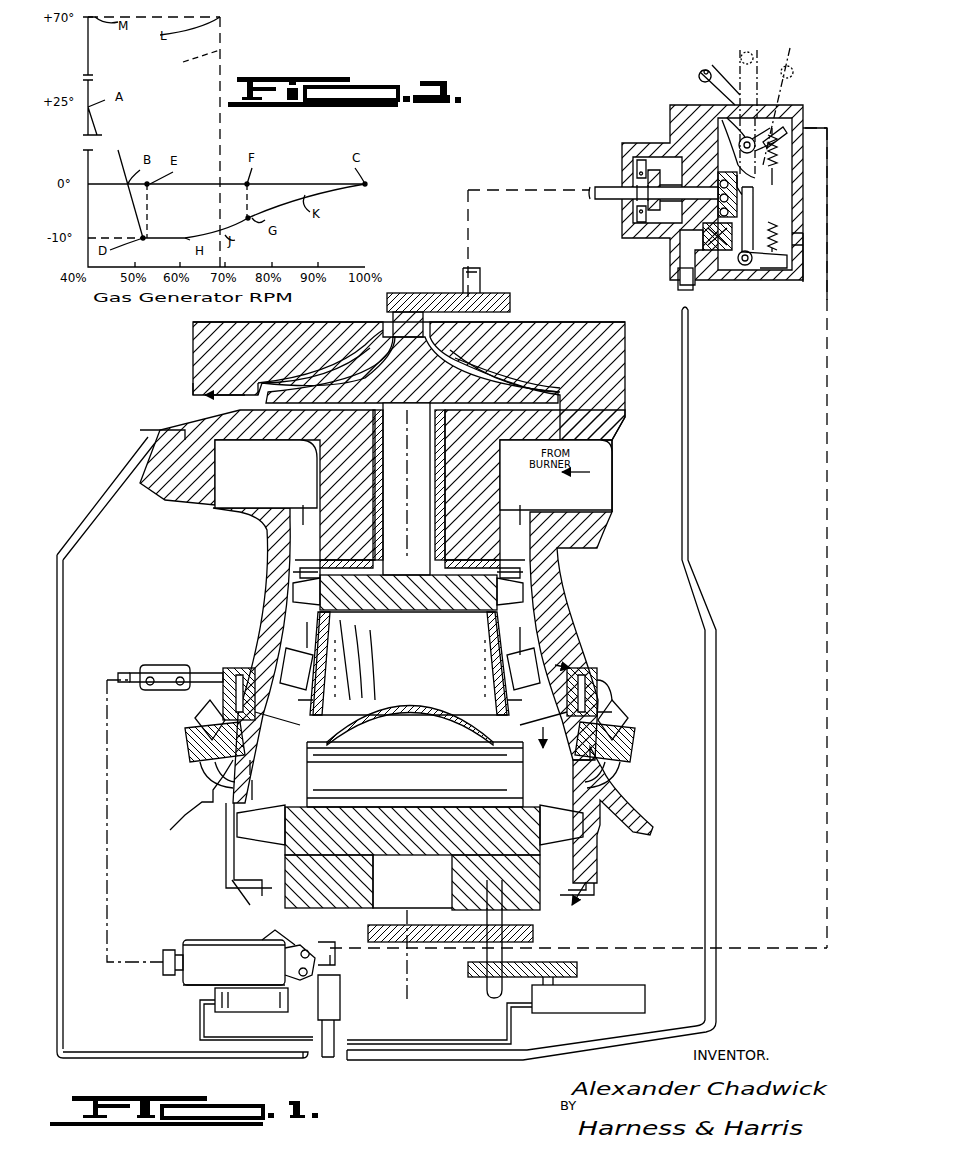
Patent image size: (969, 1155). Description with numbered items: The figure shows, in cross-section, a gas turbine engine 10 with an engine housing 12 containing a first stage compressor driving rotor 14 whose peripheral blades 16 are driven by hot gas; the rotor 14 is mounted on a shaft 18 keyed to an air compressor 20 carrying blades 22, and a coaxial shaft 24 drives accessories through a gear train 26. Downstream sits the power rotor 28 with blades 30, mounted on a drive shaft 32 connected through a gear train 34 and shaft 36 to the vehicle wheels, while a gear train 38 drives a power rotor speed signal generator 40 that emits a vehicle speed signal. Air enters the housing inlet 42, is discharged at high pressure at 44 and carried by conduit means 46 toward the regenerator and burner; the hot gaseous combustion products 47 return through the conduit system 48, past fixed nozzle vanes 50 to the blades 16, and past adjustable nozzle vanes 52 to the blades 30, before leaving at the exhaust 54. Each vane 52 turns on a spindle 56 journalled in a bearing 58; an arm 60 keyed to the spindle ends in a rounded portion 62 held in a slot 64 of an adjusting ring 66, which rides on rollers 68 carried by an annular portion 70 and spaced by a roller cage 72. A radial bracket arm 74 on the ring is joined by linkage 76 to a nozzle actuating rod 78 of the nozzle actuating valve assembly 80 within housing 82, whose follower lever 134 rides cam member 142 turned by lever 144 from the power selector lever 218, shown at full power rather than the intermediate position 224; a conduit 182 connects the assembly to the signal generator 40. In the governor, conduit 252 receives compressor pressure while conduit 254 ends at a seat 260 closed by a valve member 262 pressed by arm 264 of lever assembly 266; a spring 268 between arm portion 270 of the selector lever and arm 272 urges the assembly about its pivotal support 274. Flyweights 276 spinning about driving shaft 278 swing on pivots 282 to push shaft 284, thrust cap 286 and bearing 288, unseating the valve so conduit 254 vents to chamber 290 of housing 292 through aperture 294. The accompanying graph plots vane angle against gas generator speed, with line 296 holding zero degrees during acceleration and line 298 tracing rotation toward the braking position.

In FIG. 1, the gas turbine engine 10 is at (550, 312).
In FIG. 1, the engine housing 12 is at (278, 557).
In FIG. 1, the compressor driving rotor 14 is at (400, 615).
In FIG. 1, the peripheral blades 16 is at (300, 600).
In FIG. 1, the shaft 18 is at (409, 489).
In FIG. 1, the air compressor 20 is at (412, 370).
In FIG. 1, the compressor blades 22 is at (330, 368).
In FIG. 1, the coaxial shaft 24 is at (393, 320).
In FIG. 1, the gear train 26 is at (441, 292).
In FIG. 1, the power rotor 28 is at (412, 812).
In FIG. 1, the power rotor blades 30 is at (233, 848).
In FIG. 1, the drive shaft 32 is at (412, 882).
In FIG. 1, the gear train 34 is at (450, 942).
In FIG. 1, the shaft 36 is at (487, 985).
In FIG. 1, the gear train 38 is at (540, 958).
In FIG. 1, the power rotor speed signal generator 40 is at (622, 985).
In FIG. 1, the housing inlet 42 is at (527, 381).
In FIG. 1, the compressor discharge 44 is at (294, 358).
In FIG. 1, the conduit means 46 is at (193, 388).
In FIG. 1, the hot gaseous combustion products 47 is at (590, 466).
In FIG. 1, the conduit system 48 is at (268, 547).
In FIG. 1, the fixed nozzles or vanes 50 is at (300, 573).
In FIG. 1, the adjustable nozzles or vanes 52 is at (320, 784).
In FIG. 1, the exhaust 54 is at (258, 895).
In FIG. 1, the spindle 56 is at (210, 775).
In FIG. 1, the bearing 58 is at (192, 762).
In FIG. 1, the arm 60 is at (195, 718).
In FIG. 1, the rounded portion 62 is at (218, 703).
In FIG. 1, the slot 64 is at (620, 700).
In FIG. 1, the adjusting ring 66 is at (648, 650).
In FIG. 1, the rollers 68 is at (409, 697).
In FIG. 1, the annular portion 70 is at (410, 673).
In FIG. 1, the roller cage 72 is at (578, 665).
In FIG. 1, the radial bracket arm 74 is at (216, 670).
In FIG. 1, the linkage 76 is at (170, 665).
In FIG. 1, the nozzle actuating rod 78 is at (130, 677).
In FIG. 1, the nozzle actuating valve assembly 80 is at (185, 990).
In FIG. 1, the housing 82 is at (268, 930).
In FIG. 1, the follower lever 134 is at (300, 1002).
In FIG. 1, the cam member 142 is at (285, 970).
In FIG. 1, the lever 144 is at (285, 950).
In FIG. 1, the conduit 182 is at (372, 1037).
In FIG. 1, the power selector lever 218 is at (700, 70).
In FIG. 1, the intermediate position 224 is at (763, 35).
In FIG. 1, the conduit 252 is at (140, 436).
In FIG. 1, the conduit 254 is at (682, 296).
In FIG. 1, the seat 260 is at (748, 268).
In FIG. 1, the valve member 262 is at (718, 200).
In FIG. 1, the arm 264 is at (770, 212).
In FIG. 1, the lever assembly 266 is at (772, 252).
In FIG. 1, the spring 268 is at (752, 160).
In FIG. 1, the arm portion 270 is at (782, 85).
In FIG. 1, the arm 272 is at (785, 270).
In FIG. 1, the pivotal support 274 is at (693, 288).
In FIG. 1, the flyweights 276 is at (652, 157).
In FIG. 1, the driving shaft 278 is at (612, 190).
In FIG. 1, the pivots 282 is at (637, 168).
In FIG. 1, the shaft 284 is at (665, 200).
In FIG. 1, the thrust cap 286 is at (722, 125).
In FIG. 1, the bearing 288 is at (738, 162).
In FIG. 1, the chamber 290 is at (795, 118).
In FIG. 1, the housing 292 is at (668, 105).
In FIG. 1, the aperture 294 is at (805, 250).
In FIG. 2, the line 296 is at (280, 184).
In FIG. 2, the line 298 is at (157, 48).